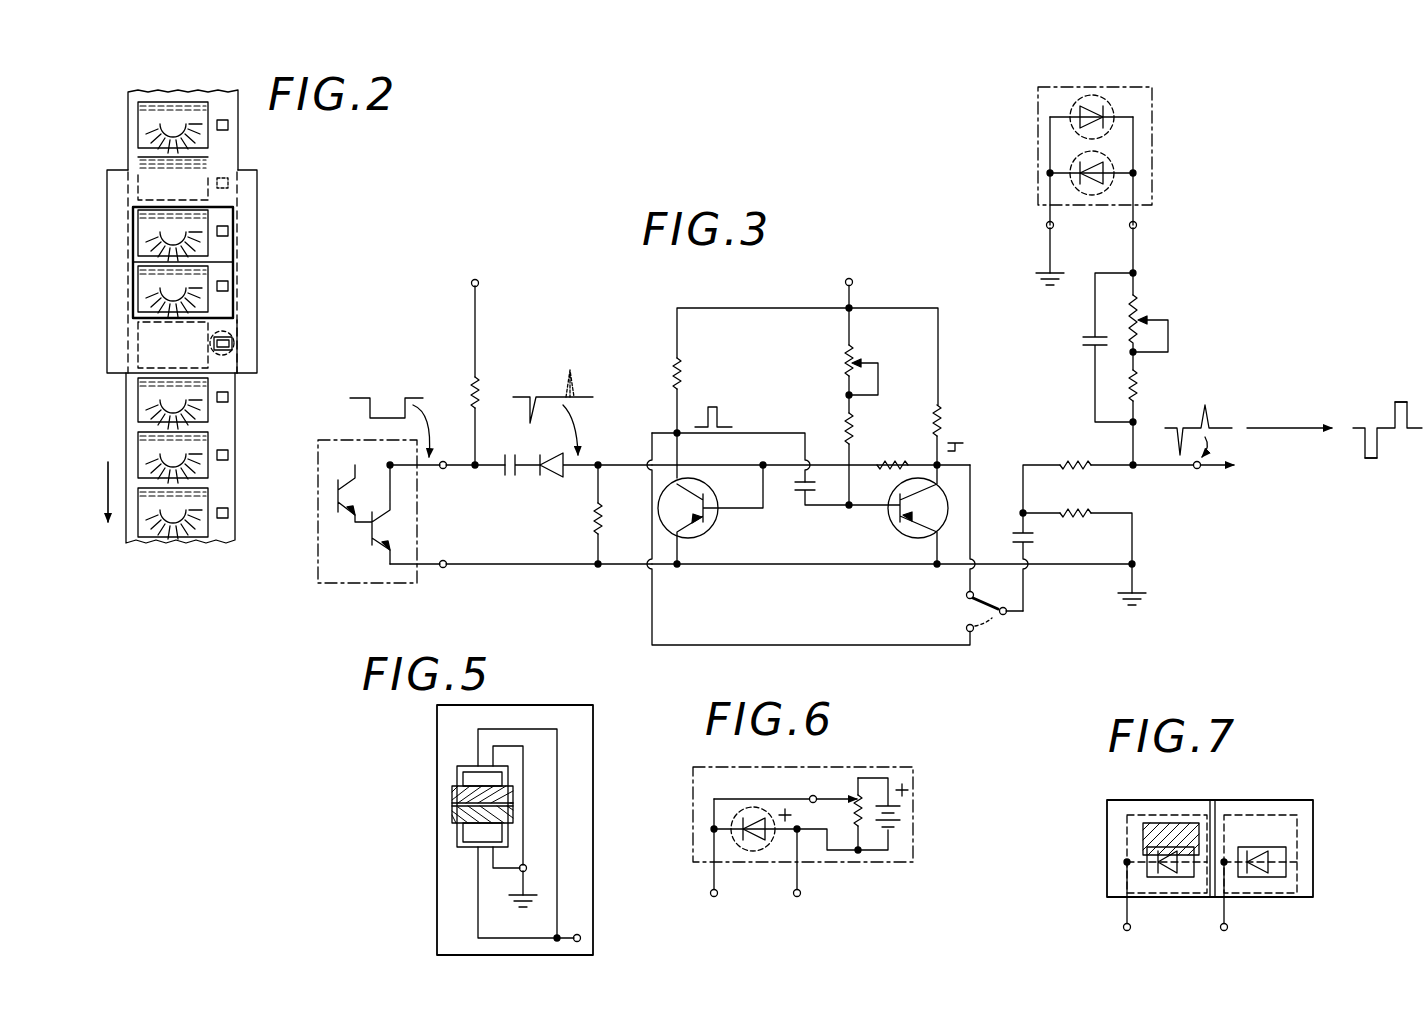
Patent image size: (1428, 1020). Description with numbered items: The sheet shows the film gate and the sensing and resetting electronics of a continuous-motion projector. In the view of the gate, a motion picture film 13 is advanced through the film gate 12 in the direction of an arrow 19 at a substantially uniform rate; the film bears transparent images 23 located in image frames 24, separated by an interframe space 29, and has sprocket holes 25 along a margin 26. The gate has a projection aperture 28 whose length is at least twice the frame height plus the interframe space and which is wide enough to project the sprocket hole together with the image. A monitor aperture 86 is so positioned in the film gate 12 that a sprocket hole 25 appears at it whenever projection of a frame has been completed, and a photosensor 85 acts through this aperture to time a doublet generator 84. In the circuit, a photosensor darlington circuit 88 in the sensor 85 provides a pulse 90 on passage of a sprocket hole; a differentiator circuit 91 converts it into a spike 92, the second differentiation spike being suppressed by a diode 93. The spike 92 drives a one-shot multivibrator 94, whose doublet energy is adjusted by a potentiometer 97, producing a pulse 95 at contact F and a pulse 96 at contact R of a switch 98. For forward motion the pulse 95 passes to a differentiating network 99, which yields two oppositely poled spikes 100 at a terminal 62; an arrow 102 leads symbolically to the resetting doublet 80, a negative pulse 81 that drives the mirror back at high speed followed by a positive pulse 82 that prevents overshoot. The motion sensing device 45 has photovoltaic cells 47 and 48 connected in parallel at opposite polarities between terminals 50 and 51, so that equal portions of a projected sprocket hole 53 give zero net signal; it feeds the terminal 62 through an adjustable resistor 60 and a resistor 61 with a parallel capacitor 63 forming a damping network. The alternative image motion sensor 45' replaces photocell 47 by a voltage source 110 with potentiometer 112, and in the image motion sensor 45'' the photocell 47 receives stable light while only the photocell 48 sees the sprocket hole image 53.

In FIG. 2, the film gate 12 is at (107, 360).
In FIG. 2, the motion picture film 13 is at (128, 141).
In FIG. 2, the arrow 19 is at (108, 492).
In FIG. 2, the transparent images 23 is at (153, 236).
In FIG. 2, the image frames 24 is at (208, 242).
In FIG. 2, the sprocket holes 25 is at (229, 456).
In FIG. 2, the margin 26 is at (236, 140).
In FIG. 2, the projection aperture 28 is at (140, 258).
In FIG. 2, the interframe space 29 is at (205, 263).
In FIG. 3, the motion sensing device 45 is at (1062, 156).
In FIG. 5, the motion sensing device 45 is at (485, 830).
In FIG. 6, the image motion sensor 45' is at (778, 803).
In FIG. 7, the image motion sensor 45'' is at (1178, 848).
In FIG. 3, the photovoltaic cell 47 is at (1112, 108).
In FIG. 5, the photovoltaic cell 47 is at (457, 777).
In FIG. 7, the photovoltaic cell 47 is at (1281, 868).
In FIG. 3, the photovoltaic cell 48 is at (1118, 162).
In FIG. 5, the photovoltaic cell 48 is at (457, 837).
In FIG. 6, the photovoltaic cell 48 is at (760, 851).
In FIG. 7, the photovoltaic cell 48 is at (1163, 877).
In FIG. 3, the terminal 50 is at (1046, 225).
In FIG. 5, the terminal 50 is at (527, 864).
In FIG. 6, the terminal 50 is at (713, 897).
In FIG. 7, the terminal 50 is at (1123, 927).
In FIG. 3, the terminal 51 is at (1136, 225).
In FIG. 5, the terminal 51 is at (577, 935).
In FIG. 6, the terminal 51 is at (801, 893).
In FIG. 7, the terminal 51 is at (1227, 927).
In FIG. 5, the projected sprocket hole 53 is at (452, 805).
In FIG. 7, the projected sprocket hole 53 is at (1168, 818).
In FIG. 3, the resistor 60 is at (1140, 304).
In FIG. 3, the resistor 61 is at (1138, 377).
In FIG. 3, the terminal 62 is at (1198, 473).
In FIG. 3, the capacitor 63 is at (1082, 341).
In FIG. 3, the resetting doublet 80 is at (1387, 435).
In FIG. 3, the negative pulse 81 is at (1366, 444).
In FIG. 3, the positive pulse 82 is at (1393, 400).
In FIG. 3, the doublet generator 84 is at (525, 370).
In FIG. 2, the photosensor 85 is at (236, 355).
In FIG. 3, the photosensor 85 is at (361, 519).
In FIG. 2, the monitor aperture 86 is at (232, 337).
In FIG. 3, the photosensor darlington circuit 88 is at (362, 462).
In FIG. 3, the pulse 90 is at (363, 400).
In FIG. 3, the differentiator circuit 91 is at (549, 514).
In FIG. 3, the spike 92 is at (531, 426).
In FIG. 3, the diode 93 is at (553, 476).
In FIG. 3, the one-shot multivibrator 94 is at (889, 458).
In FIG. 3, the pulse 95 is at (968, 442).
In FIG. 3, the pulse 96 is at (724, 407).
In FIG. 3, the potentiometer 97 is at (843, 363).
In FIG. 3, the switch 98 is at (982, 620).
In FIG. 3, the differentiating network 99 is at (1079, 520).
In FIG. 3, the spikes 100 is at (1178, 422).
In FIG. 3, the arrow 102 is at (1318, 428).
In FIG. 6, the voltage source 110 is at (895, 810).
In FIG. 6, the potentiometer 112 is at (858, 788).